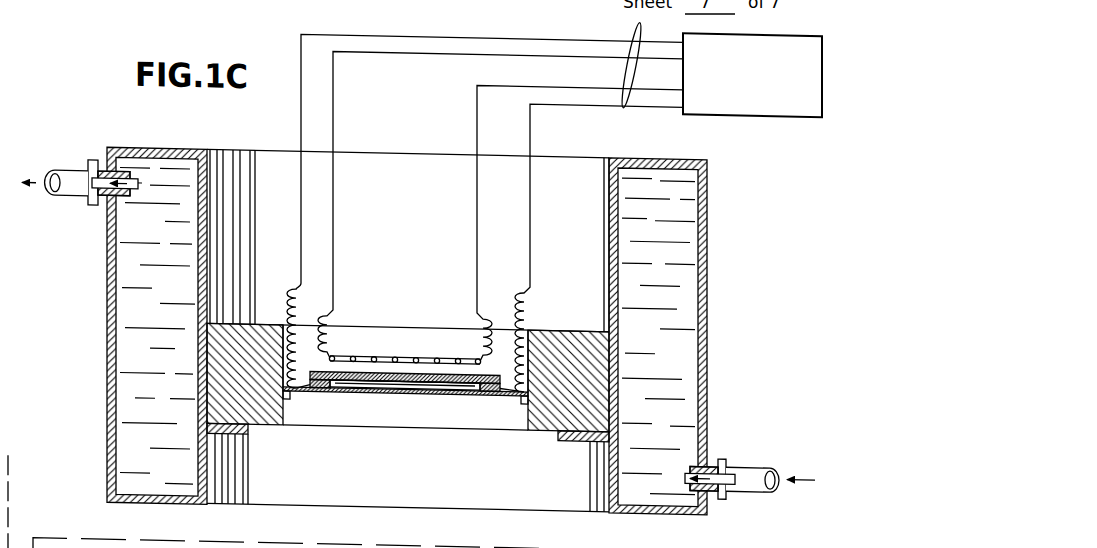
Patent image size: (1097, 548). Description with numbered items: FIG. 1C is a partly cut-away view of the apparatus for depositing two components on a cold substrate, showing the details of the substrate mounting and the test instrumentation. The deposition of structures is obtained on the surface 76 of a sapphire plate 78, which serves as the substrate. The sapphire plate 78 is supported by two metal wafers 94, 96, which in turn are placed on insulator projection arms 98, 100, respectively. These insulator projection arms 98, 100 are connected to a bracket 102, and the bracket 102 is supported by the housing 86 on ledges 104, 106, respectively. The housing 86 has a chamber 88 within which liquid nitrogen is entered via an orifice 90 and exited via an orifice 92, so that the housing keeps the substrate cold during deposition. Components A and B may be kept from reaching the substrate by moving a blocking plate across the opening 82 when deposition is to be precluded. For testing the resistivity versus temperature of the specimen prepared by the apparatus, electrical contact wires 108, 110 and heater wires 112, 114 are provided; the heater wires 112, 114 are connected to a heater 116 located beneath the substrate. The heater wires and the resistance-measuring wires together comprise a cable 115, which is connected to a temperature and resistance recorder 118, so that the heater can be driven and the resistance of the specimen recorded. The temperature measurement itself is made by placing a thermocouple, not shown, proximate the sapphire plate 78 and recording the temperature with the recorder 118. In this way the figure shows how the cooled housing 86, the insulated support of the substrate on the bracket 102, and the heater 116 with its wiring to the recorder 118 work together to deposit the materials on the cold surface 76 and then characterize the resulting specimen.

The surface 76 is at (394, 394).
The sapphire plate 78 is at (428, 384).
The opening 82 is at (402, 488).
The housing 86 is at (97, 425).
The chamber 88 is at (166, 404).
The orifice 90 is at (751, 455).
The orifice 92 is at (63, 168).
The metal wafer 94 is at (336, 386).
The metal wafer 96 is at (476, 385).
The insulator projection arm 98 is at (300, 391).
The insulator projection arm 100 is at (490, 385).
The bracket 102 is at (270, 416).
The ledge 104 is at (249, 430).
The ledge 106 is at (570, 428).
The electrical contact wire 108 is at (388, 27).
The electrical contact wire 110 is at (530, 252).
The heater wire 112 is at (364, 49).
The heater wire 114 is at (475, 248).
The cable 115 is at (637, 9).
The heater 116 is at (407, 349).
The temperature and resistance recorder 118 is at (797, 101).